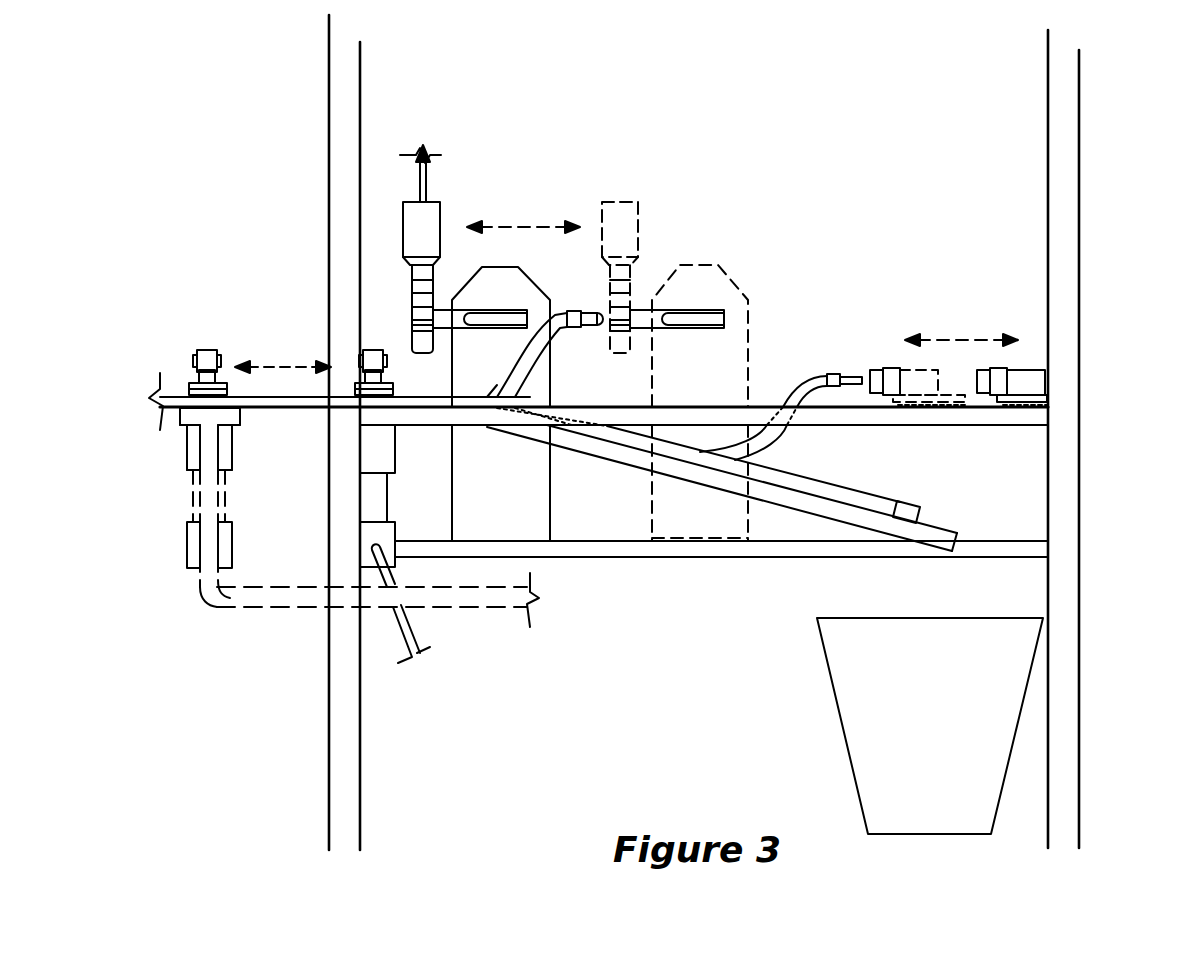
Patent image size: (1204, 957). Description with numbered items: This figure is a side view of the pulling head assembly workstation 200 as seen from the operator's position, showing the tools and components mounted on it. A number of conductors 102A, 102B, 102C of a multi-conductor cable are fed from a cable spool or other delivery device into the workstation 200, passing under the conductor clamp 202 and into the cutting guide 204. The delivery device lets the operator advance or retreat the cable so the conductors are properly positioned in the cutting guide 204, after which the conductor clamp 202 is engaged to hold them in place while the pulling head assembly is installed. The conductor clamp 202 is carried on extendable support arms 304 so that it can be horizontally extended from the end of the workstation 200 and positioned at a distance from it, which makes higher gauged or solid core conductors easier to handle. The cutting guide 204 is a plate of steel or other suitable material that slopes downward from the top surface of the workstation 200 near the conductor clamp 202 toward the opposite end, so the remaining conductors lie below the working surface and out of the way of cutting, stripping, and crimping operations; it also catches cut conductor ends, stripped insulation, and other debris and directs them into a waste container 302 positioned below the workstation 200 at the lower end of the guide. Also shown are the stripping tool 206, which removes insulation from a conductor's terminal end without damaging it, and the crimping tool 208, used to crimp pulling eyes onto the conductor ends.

The workstation 200 is at (1155, 160).
The conductor clamp 202 is at (367, 385).
The cutting guide 204 is at (618, 450).
The stripping tool 206 is at (1030, 380).
The crimping tool 208 is at (430, 226).
The conductor 102A is at (900, 507).
The conductor 102B is at (826, 374).
The conductor 102C is at (537, 338).
The waste container 302 is at (848, 688).
The extendable support arms 304 is at (232, 588).